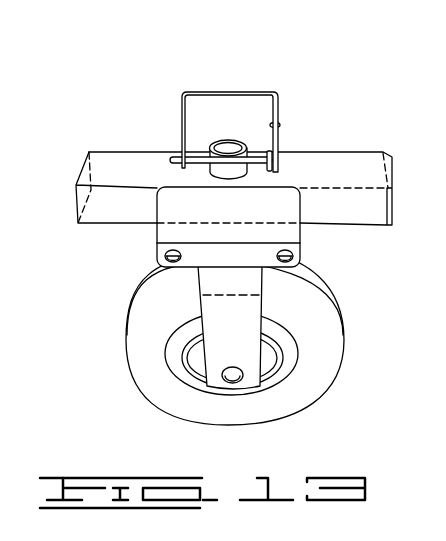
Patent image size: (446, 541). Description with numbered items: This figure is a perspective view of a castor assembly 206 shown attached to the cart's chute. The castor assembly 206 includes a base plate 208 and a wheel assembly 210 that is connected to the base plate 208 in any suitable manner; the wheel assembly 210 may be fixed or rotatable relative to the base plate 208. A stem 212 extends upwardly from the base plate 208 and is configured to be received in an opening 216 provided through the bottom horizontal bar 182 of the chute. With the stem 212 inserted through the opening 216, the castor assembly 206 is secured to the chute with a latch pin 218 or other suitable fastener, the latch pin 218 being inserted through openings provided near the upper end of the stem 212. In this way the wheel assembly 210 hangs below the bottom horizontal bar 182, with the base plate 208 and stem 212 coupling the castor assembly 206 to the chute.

The castor assembly 206 is at (247, 219).
The base plate 208 is at (156, 262).
The wheel assembly 210 is at (212, 366).
The stem 212 is at (228, 140).
The opening 216 is at (211, 150).
The latch pin 218 is at (277, 157).
The bottom horizontal bar 182 is at (373, 157).